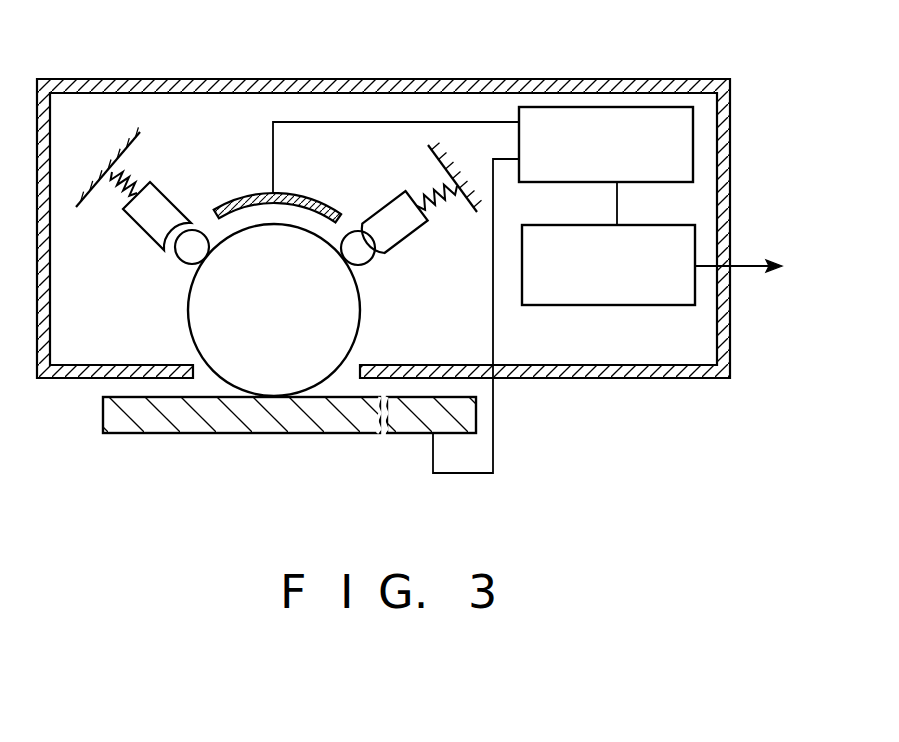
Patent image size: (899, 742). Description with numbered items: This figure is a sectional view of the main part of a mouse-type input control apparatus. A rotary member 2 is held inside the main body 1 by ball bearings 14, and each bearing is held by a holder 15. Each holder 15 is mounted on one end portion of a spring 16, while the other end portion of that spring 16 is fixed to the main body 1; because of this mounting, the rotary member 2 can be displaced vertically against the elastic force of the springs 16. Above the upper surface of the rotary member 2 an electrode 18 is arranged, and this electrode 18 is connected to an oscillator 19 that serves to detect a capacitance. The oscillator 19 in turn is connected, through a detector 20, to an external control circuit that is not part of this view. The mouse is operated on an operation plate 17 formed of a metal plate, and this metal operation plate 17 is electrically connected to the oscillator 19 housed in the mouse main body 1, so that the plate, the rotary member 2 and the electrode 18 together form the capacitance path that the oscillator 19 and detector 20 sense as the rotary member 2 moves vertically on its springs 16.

The main body 1 is at (362, 86).
The rotary member 2 is at (360, 313).
The ball bearings 14 is at (190, 257).
The holder 15 is at (148, 236).
The spring 16 is at (126, 179).
The operation plate 17 is at (152, 436).
The electrode 18 is at (260, 194).
The oscillator 19 is at (697, 163).
The detector 20 is at (697, 250).